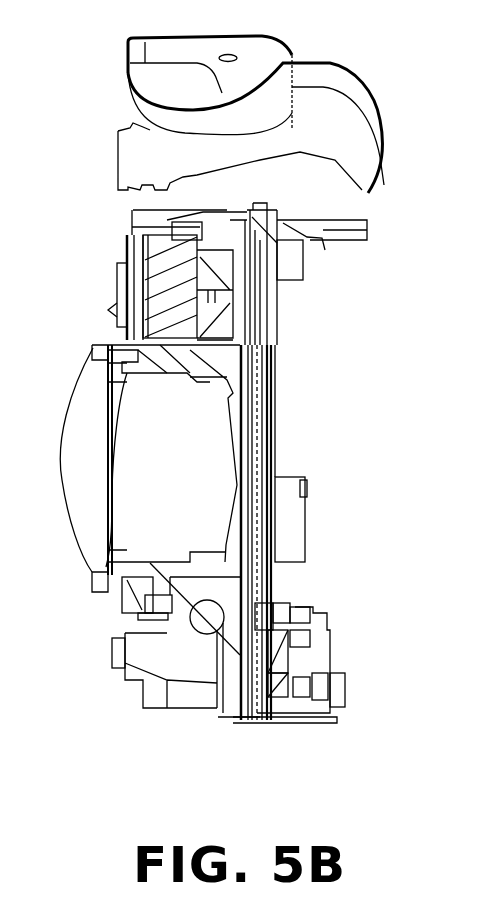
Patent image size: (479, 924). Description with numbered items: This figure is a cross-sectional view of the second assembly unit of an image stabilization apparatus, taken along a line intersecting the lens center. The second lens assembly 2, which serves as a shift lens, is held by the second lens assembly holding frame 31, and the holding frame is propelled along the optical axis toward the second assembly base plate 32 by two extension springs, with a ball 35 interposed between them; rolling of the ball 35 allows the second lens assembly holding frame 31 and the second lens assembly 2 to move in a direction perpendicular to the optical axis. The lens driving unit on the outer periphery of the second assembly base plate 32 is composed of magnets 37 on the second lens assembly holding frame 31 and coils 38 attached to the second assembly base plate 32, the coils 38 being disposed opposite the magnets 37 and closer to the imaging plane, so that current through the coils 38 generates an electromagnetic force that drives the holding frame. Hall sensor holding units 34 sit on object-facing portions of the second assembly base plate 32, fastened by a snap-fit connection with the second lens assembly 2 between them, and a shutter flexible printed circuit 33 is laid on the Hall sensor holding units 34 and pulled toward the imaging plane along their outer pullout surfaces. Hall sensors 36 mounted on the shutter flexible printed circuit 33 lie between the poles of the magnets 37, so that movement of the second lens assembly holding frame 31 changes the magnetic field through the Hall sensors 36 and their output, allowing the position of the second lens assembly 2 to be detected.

The second lens assembly 2 is at (123, 430).
The second lens assembly holding frame 31 is at (97, 587).
The second assembly base plate 32 is at (243, 680).
The shutter flexible printed circuit 33 is at (387, 128).
The Hall sensor holding unit 34 is at (143, 240).
The ball 35 is at (207, 620).
The Hall sensor 36 is at (117, 296).
The magnet 37 is at (180, 262).
The coil 38 is at (277, 303).